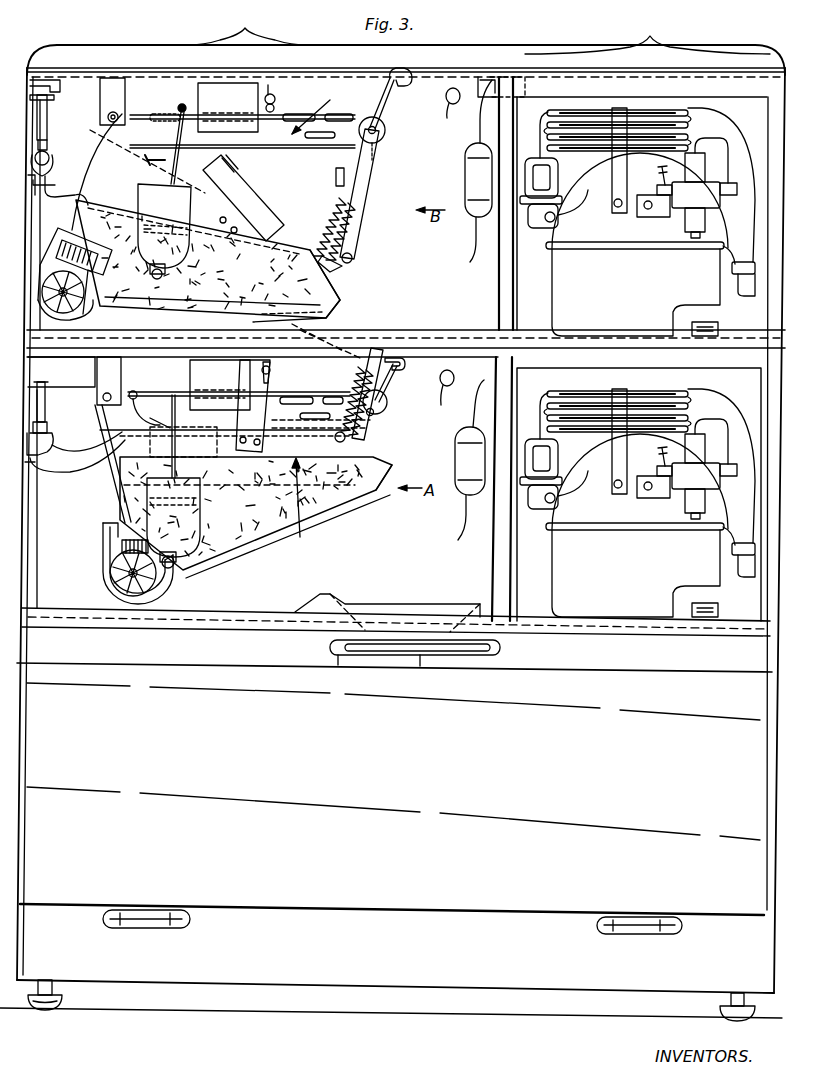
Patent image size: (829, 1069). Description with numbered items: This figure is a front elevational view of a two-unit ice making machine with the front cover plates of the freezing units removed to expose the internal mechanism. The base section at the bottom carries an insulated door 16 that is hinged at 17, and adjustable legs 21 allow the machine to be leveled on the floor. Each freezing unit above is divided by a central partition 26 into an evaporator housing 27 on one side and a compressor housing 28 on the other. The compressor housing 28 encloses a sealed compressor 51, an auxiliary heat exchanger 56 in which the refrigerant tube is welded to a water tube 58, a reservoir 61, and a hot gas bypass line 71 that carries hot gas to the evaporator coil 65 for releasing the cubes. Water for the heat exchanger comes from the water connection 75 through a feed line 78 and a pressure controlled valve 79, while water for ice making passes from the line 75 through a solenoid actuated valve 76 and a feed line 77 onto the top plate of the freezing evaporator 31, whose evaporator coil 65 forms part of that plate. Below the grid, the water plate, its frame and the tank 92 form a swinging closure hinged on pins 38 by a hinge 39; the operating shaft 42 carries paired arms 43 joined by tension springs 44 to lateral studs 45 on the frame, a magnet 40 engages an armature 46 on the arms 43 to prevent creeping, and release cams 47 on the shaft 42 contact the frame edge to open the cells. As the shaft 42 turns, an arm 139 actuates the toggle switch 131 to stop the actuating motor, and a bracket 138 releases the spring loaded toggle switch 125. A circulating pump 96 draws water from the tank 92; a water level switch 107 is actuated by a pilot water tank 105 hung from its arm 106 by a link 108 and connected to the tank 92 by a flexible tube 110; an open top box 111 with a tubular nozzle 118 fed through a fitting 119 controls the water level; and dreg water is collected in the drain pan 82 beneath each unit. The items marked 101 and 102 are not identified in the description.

The insulated door 16 is at (452, 808).
The hinge 17 is at (145, 914).
The adjustable legs 21 is at (50, 1004).
The central partition 26 is at (512, 76).
The evaporator housing 27 is at (247, 27).
The compressor housing 28 is at (647, 31).
The freezing evaporator 31 is at (316, 320).
The pins 38 is at (116, 112).
The hinge 39 is at (105, 505).
The magnet 40 is at (388, 90).
The operating shaft 42 is at (375, 138).
The paired arms 43 is at (362, 178).
The tension spring 44 is at (315, 220).
The lateral stud 45 is at (352, 265).
The armature 46 is at (336, 180).
The cams 47 is at (385, 131).
The sealed compressor 51 is at (648, 288).
The auxiliary heat exchanger 56 is at (688, 128).
The water tube 58 is at (736, 132).
The reservoir 61 is at (738, 320).
The evaporator coil 65 is at (287, 116).
The hot gas bypass line 71 is at (560, 228).
The water connection 75 is at (48, 125).
The solenoid actuated valve 76 is at (50, 160).
The feed line 77 is at (72, 474).
The feed line 78 is at (660, 178).
The pressure controlled valve 79 is at (686, 229).
The drain pan 82 is at (173, 346).
The tank 92 is at (234, 389).
The circulating pump 96 is at (72, 310).
The drain trough 101 is at (455, 330).
The discharge plate 102 is at (338, 297).
The pilot water tank 105 is at (140, 235).
The arm 106 is at (183, 105).
The water level switch 107 is at (244, 103).
The link 108 is at (176, 168).
The flexible tube 110 is at (189, 595).
The open top box 111 is at (232, 381).
The tubular nozzle 118 is at (152, 158).
The fitting 119 is at (113, 442).
The toggle switch 125 is at (269, 93).
The switch 131 is at (385, 80).
The bracket 138 is at (255, 172).
The arm 139 is at (372, 445).